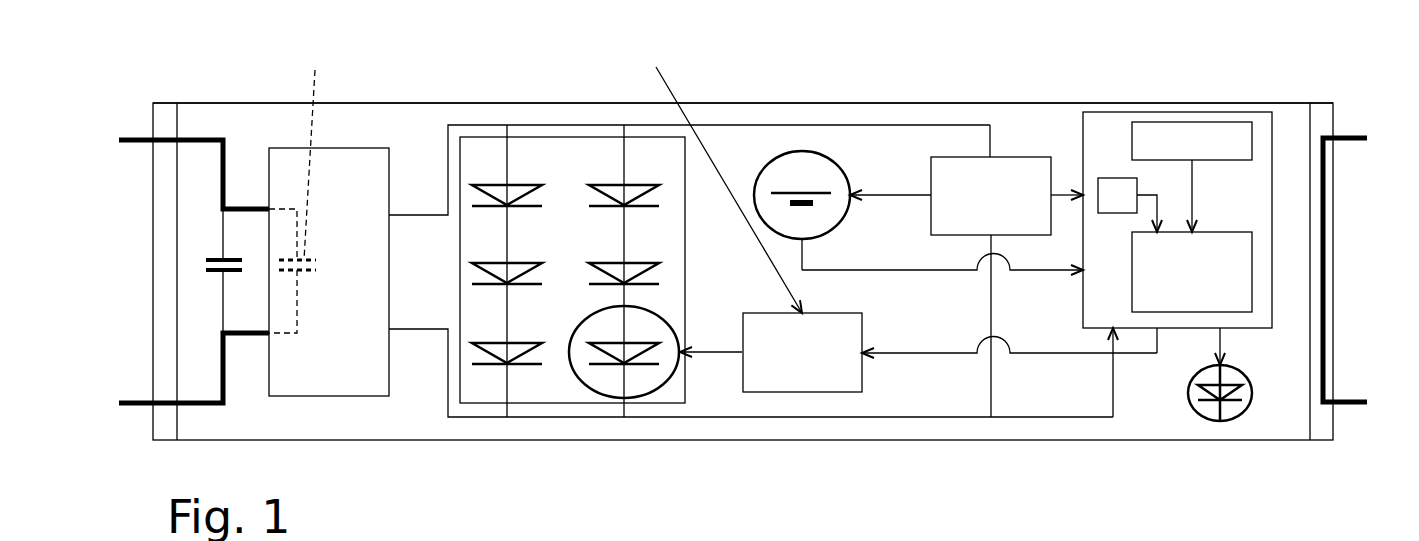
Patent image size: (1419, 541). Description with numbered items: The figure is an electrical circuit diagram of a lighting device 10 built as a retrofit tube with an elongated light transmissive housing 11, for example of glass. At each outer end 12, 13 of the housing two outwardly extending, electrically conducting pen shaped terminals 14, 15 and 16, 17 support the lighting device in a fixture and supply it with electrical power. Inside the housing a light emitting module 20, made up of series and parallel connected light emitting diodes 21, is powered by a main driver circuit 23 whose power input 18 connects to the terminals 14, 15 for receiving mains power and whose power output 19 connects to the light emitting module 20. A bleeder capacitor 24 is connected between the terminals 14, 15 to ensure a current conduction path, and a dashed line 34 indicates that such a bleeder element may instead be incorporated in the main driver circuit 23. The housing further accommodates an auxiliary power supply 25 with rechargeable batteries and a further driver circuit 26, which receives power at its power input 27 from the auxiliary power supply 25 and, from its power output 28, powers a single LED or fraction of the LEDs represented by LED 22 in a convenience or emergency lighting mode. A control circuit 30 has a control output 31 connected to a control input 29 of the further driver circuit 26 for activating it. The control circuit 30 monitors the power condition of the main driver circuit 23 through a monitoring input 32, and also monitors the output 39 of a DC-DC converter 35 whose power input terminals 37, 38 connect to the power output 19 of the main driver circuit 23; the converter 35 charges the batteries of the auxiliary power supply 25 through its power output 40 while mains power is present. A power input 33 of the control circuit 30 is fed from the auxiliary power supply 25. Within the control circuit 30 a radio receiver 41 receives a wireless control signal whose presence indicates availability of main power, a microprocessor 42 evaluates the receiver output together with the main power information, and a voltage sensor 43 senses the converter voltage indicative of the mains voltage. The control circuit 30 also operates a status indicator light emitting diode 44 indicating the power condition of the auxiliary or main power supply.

The lighting device 10 is at (382, 458).
The housing 11 is at (232, 100).
The outer end 12 is at (162, 115).
The outer end 13 is at (1323, 115).
The terminal 14 is at (133, 138).
The terminal 15 is at (130, 400).
The terminal 16 is at (1350, 120).
The terminal 17 is at (1353, 397).
The power input 18 is at (260, 242).
The power output 19 is at (398, 272).
The light emitting module 20 is at (543, 148).
The light emitting diodes 21 is at (495, 193).
The single LED 22 is at (608, 380).
The main driver circuit 23 is at (360, 167).
The bleeder capacitor 24 is at (208, 260).
The auxiliary power supply 25 is at (795, 165).
The further driver circuit 26 is at (778, 370).
The power input 27 is at (718, 171).
The power output 28 is at (685, 352).
The control input 29 is at (868, 350).
The control circuit 30 is at (1115, 125).
The control output 31 is at (1157, 330).
The monitoring input 32 is at (1113, 380).
The power input 33 is at (1075, 272).
The dashed line 34 is at (312, 144).
The DC-DC converter 35 is at (1000, 167).
The power input terminal 37 is at (992, 157).
The power input terminal 38 is at (992, 238).
The output 39 is at (1073, 187).
The power output 40 is at (930, 192).
The receiver 41 is at (1230, 130).
The processor 42 is at (1193, 297).
The voltage sensor 43 is at (1115, 180).
The status indicator light emitting diode 44 is at (1212, 420).